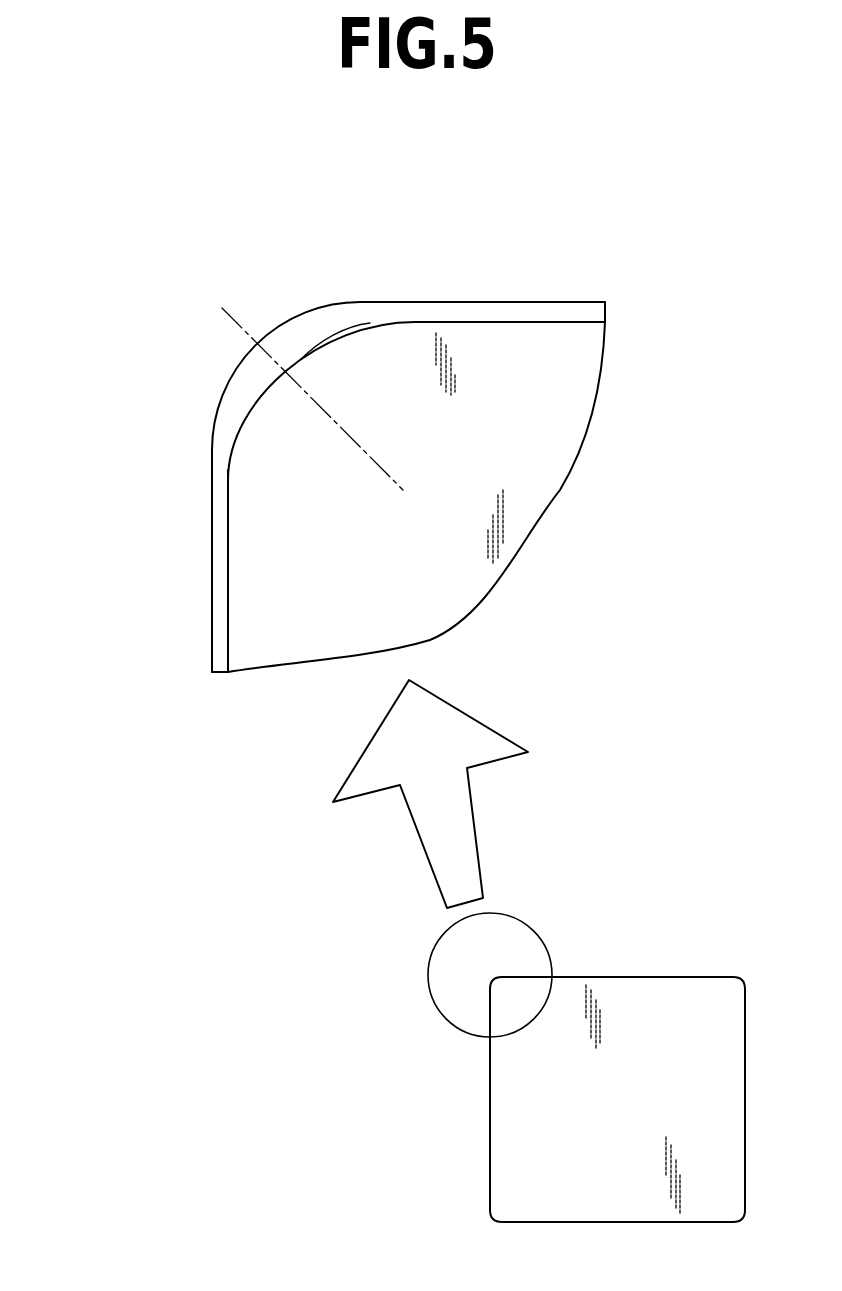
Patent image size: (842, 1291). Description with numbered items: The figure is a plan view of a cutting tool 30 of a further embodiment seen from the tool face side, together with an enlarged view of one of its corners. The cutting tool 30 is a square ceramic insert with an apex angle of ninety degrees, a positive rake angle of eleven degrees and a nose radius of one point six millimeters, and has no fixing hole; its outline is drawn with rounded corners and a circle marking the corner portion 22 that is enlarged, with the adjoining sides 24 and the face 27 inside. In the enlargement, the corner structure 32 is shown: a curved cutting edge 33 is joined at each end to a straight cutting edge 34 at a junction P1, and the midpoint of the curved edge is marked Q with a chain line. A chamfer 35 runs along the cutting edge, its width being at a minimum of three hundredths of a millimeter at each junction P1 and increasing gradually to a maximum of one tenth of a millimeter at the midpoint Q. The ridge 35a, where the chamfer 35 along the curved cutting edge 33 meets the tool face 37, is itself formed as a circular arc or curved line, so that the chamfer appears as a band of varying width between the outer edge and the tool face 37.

The corner portion of panel 22 is at (471, 975).
The side edge of panel 24 is at (532, 977).
The panel surface 27 is at (542, 1135).
The cutting tool 30 is at (437, 598).
The corner structure 32 is at (202, 323).
The curved cutting edge 33 is at (230, 370).
The straight cutting edge 34 is at (493, 303).
The chamfer 35 is at (235, 417).
The ridge 35a is at (318, 352).
The tool face 37 is at (307, 537).
The junction P1 is at (362, 302).
The midpoint of the curved cutting edge Q is at (256, 344).